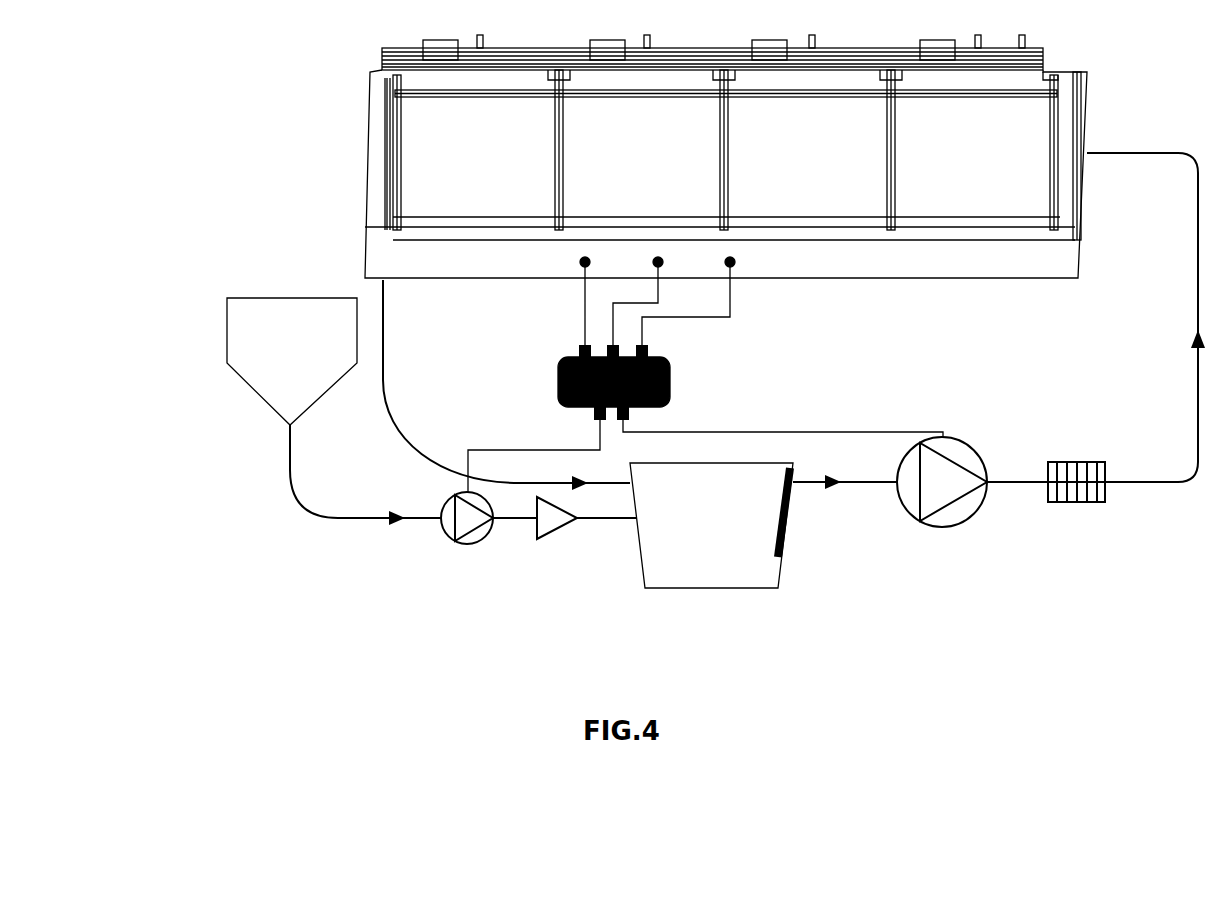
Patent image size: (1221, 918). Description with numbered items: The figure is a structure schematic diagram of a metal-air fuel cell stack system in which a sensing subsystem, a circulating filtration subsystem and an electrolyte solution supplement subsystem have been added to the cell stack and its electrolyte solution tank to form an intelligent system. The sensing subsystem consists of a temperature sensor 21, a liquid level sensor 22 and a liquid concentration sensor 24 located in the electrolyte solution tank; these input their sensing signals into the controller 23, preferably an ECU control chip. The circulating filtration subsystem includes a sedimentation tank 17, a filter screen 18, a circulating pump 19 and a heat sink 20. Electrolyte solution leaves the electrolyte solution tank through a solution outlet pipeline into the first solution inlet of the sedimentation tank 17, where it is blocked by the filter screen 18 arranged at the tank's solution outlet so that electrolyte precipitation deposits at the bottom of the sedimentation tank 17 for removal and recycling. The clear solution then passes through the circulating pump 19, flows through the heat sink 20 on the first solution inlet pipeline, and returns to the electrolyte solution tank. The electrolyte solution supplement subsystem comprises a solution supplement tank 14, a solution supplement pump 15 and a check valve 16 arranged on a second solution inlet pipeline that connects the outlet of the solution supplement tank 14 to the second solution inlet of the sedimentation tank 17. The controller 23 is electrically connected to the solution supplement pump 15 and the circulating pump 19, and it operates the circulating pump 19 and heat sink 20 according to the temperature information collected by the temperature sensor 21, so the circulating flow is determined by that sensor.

The solution supplement tank 14 is at (275, 345).
The solution supplement pump 15 is at (467, 546).
The check valve 16 is at (555, 540).
The sedimentation tank 17 is at (662, 540).
The filter screen 18 is at (785, 538).
The circulating pump 19 is at (967, 510).
The heat sink 20 is at (1105, 502).
The temperature sensor 21 is at (735, 265).
The liquid level sensor 22 is at (663, 265).
The controller 23 is at (675, 368).
The liquid concentration sensor 24 is at (580, 268).